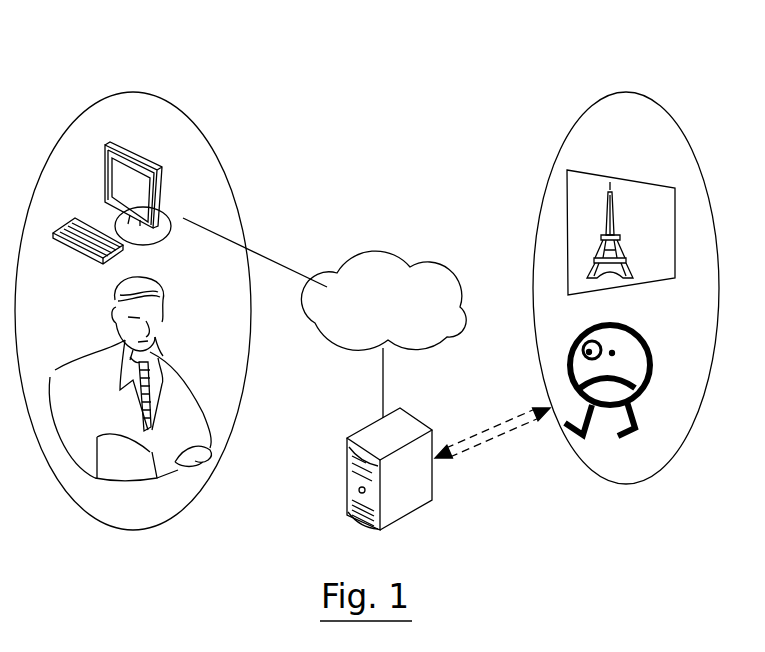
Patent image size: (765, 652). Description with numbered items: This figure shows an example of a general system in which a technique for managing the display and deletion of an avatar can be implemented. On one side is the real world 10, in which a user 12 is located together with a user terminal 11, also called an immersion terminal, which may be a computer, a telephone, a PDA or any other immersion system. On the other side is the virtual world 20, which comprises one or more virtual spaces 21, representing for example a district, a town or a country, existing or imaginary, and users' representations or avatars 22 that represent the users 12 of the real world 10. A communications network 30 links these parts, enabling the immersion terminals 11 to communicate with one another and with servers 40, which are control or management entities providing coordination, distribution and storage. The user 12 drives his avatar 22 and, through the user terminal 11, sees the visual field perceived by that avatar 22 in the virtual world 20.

The real world 10 is at (178, 105).
The user terminal 11 is at (163, 193).
The user 12 is at (188, 478).
The virtual world 20 is at (585, 113).
The virtual space 21 is at (588, 223).
The avatar 22 is at (647, 402).
The communications network 30 is at (386, 270).
The server 40 is at (412, 510).